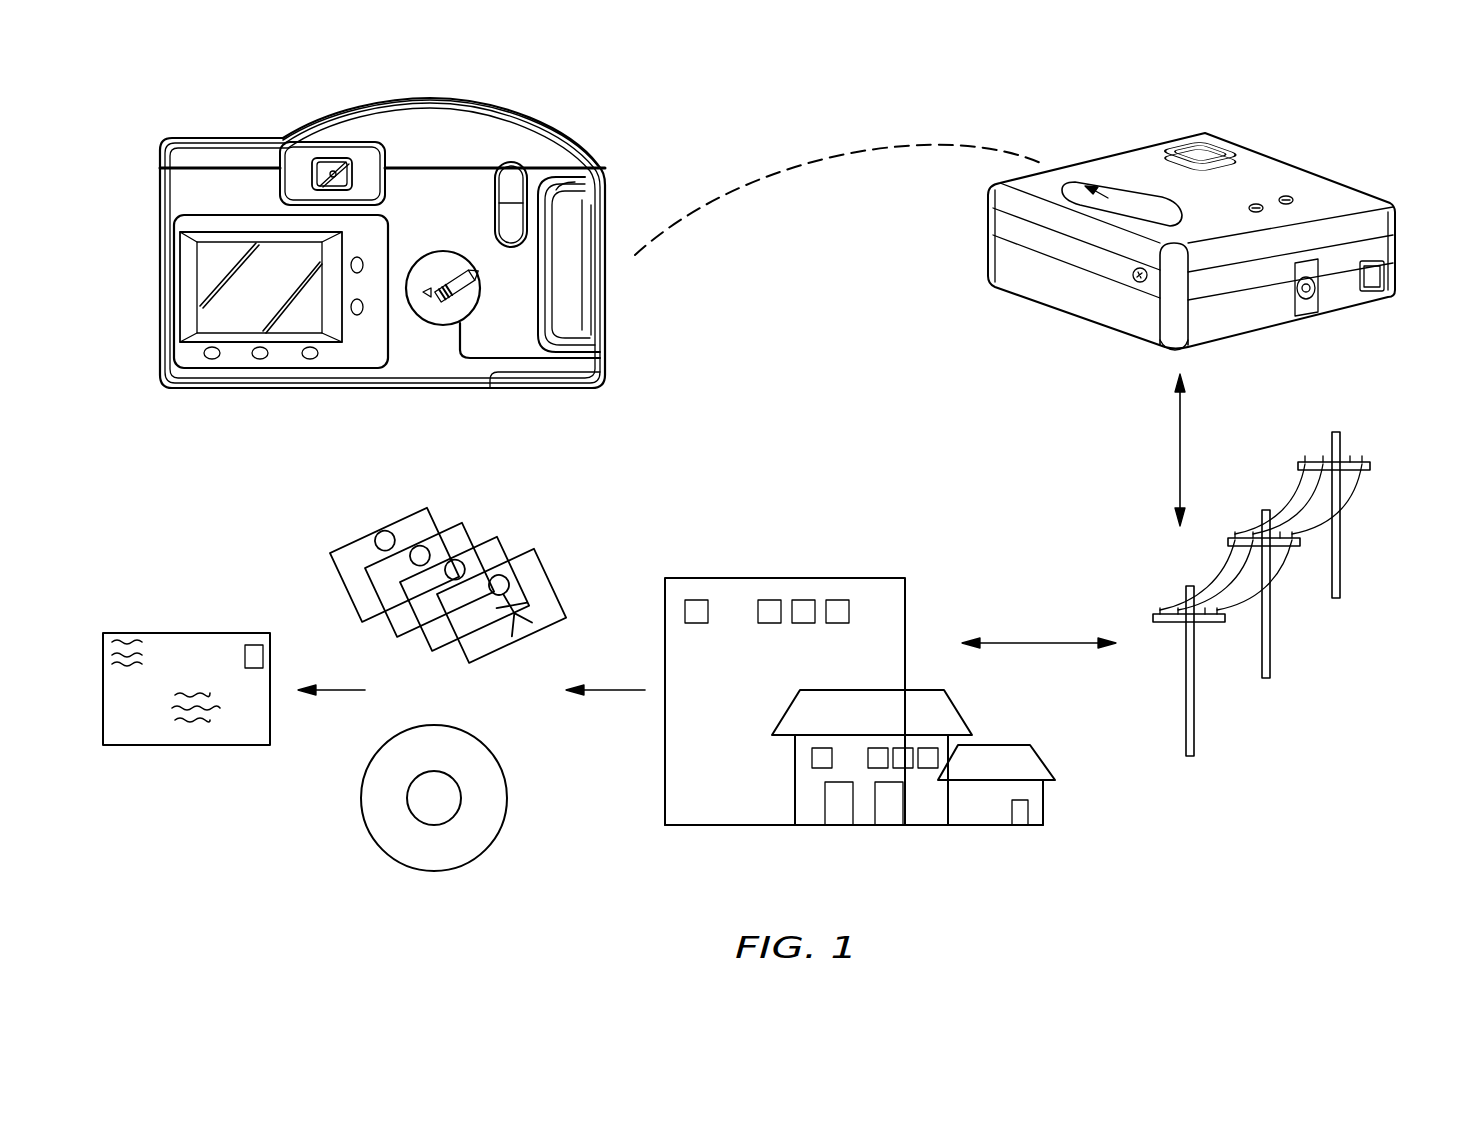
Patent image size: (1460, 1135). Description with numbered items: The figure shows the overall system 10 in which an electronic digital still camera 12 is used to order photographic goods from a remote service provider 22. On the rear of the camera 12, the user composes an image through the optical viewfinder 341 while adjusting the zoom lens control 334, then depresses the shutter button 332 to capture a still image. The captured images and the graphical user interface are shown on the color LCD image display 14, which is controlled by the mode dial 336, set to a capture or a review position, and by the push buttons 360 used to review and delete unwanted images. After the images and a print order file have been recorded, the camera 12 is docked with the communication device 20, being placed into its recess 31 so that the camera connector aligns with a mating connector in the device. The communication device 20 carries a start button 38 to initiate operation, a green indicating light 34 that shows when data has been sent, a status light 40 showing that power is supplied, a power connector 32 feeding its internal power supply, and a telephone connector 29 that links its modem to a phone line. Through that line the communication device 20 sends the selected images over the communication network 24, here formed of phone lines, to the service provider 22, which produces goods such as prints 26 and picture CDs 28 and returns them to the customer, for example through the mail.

The system 10 is at (1142, 809).
The electronic digital still camera 12 is at (598, 388).
The color LCD image display 14 is at (222, 295).
The communication device 20 is at (1073, 176).
The service provider 22 is at (783, 580).
The communication network 24 is at (1307, 655).
The prints 26 is at (553, 575).
The picture CDs 28 is at (500, 808).
The telephone connector 29 is at (1380, 283).
The recess 31 is at (1142, 194).
The power connector 32 is at (1308, 302).
The indicating light 34 is at (1257, 204).
The start button 38 is at (1196, 160).
The status light 40 is at (1133, 275).
The shutter button 332 is at (515, 124).
The zoom lens control 334 is at (512, 182).
The mode dial 336 is at (463, 300).
The optical viewfinder 341 is at (322, 170).
The push buttons 360 is at (216, 358).